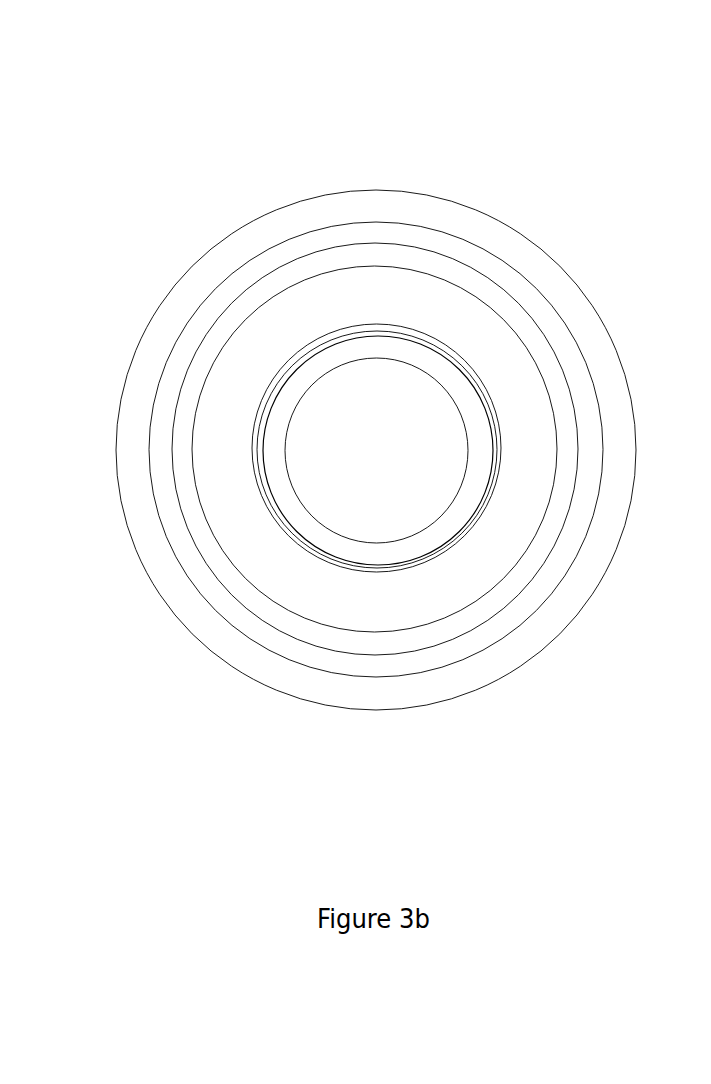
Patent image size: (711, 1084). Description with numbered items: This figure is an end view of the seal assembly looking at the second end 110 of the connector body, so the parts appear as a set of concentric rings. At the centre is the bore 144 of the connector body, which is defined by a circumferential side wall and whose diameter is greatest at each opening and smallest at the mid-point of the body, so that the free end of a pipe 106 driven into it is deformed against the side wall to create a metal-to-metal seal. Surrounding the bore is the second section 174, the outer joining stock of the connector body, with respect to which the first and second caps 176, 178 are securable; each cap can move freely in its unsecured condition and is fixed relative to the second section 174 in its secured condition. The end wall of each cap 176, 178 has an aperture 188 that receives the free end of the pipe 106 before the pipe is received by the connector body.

The second end 110 is at (510, 182).
The aperture 188 is at (327, 338).
The second cap 178 is at (488, 342).
The bore 144 is at (355, 457).
The pipe 106 is at (457, 517).
The first cap 176 is at (233, 650).
The second section 174 is at (400, 663).